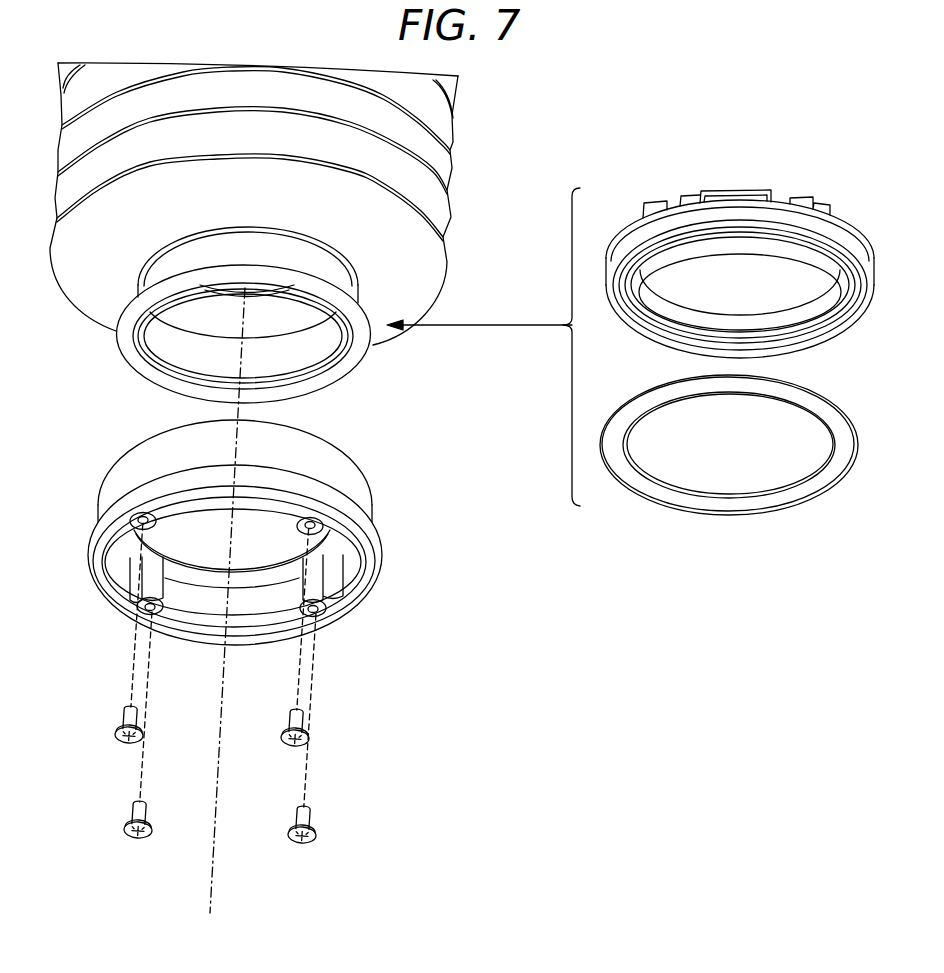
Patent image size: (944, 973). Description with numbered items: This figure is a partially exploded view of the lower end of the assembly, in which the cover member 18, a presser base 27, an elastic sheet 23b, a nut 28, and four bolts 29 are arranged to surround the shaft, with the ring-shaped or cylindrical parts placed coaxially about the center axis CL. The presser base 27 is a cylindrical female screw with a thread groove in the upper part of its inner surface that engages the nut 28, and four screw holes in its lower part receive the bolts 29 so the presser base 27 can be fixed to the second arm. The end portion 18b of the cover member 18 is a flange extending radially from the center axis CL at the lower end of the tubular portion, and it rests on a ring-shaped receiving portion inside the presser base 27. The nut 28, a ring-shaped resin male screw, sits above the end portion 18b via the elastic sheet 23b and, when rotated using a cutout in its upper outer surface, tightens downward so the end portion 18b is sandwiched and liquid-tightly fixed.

The cover member 18 is at (490, 145).
The end portion 18b is at (352, 368).
The presser base 27 is at (362, 500).
The nut 28 is at (780, 195).
The elastic sheet 23b is at (757, 512).
The bolts 29 is at (122, 712).
The center axis CL is at (213, 876).